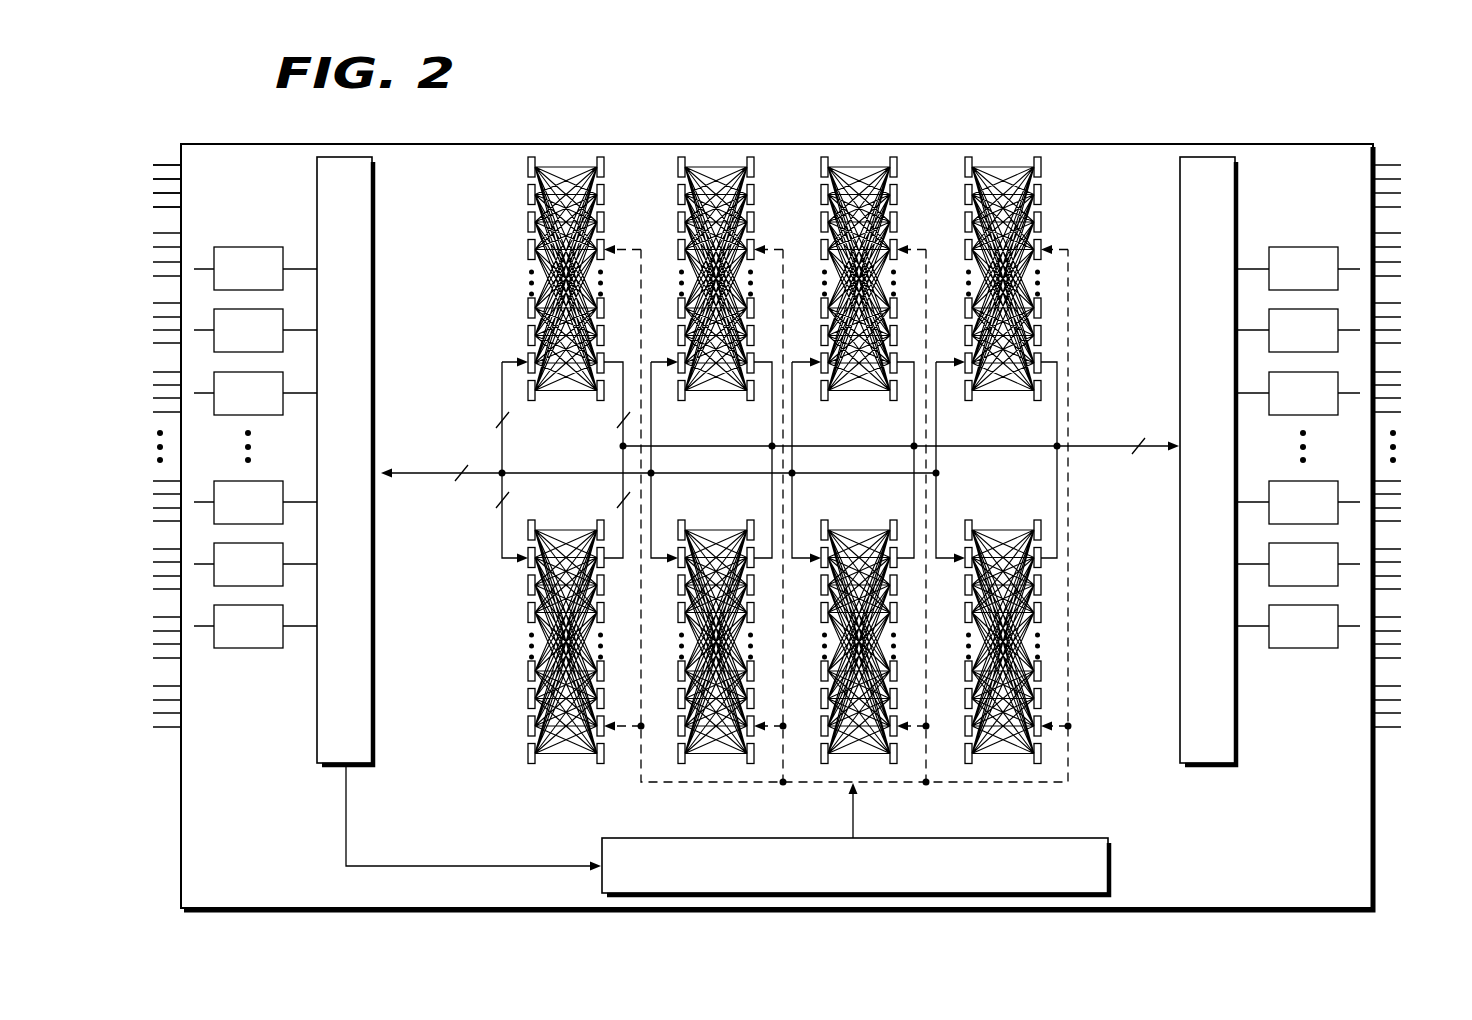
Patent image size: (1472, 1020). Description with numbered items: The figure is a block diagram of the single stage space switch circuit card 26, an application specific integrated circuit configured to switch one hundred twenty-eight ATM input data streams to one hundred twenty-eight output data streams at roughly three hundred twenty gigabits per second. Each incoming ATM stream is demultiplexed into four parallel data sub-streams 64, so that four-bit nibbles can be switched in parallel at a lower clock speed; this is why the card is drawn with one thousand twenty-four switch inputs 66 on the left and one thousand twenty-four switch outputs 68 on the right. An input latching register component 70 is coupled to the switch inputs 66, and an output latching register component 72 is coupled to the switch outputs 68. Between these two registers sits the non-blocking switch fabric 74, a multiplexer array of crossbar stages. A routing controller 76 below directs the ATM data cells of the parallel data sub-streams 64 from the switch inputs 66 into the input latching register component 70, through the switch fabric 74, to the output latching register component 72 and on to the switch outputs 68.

The single stage space switch circuit card 26 is at (304, 116).
The parallel data sub-streams 64 is at (150, 207).
The switch inputs 66 is at (164, 140).
The switch outputs 68 is at (1410, 146).
The input latching register component 70 is at (373, 222).
The output latching register component 72 is at (1178, 220).
The non-blocking switch fabric 74 is at (528, 137).
The routing controller 76 is at (695, 836).